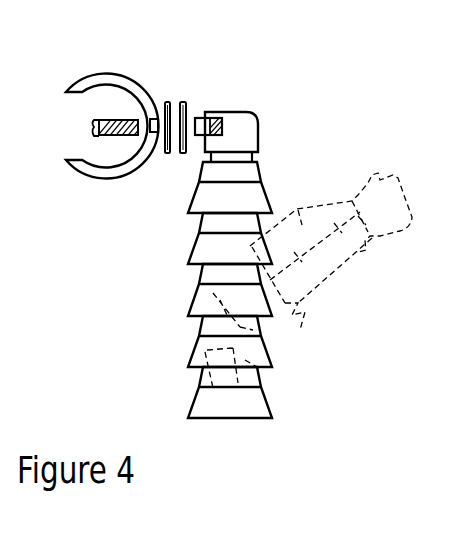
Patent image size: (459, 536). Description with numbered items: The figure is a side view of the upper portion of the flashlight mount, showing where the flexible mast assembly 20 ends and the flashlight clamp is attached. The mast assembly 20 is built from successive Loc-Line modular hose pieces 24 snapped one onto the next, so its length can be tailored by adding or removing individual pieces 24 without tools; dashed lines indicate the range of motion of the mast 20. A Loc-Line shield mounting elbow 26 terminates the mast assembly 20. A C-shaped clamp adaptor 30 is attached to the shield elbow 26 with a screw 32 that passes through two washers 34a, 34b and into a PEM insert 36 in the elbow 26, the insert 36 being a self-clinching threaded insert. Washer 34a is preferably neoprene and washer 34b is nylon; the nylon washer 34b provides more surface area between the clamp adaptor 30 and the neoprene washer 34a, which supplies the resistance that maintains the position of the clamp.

The mast assembly 20 is at (383, 252).
The modular hose piece 24 is at (210, 229).
The shield mounting elbow 26 is at (253, 131).
The C-shaped clamp adaptor 30 is at (117, 83).
The screw 32 is at (94, 131).
The neoprene washer 34a is at (170, 100).
The nylon washer 34b is at (183, 154).
The PEM insert 36 is at (223, 123).